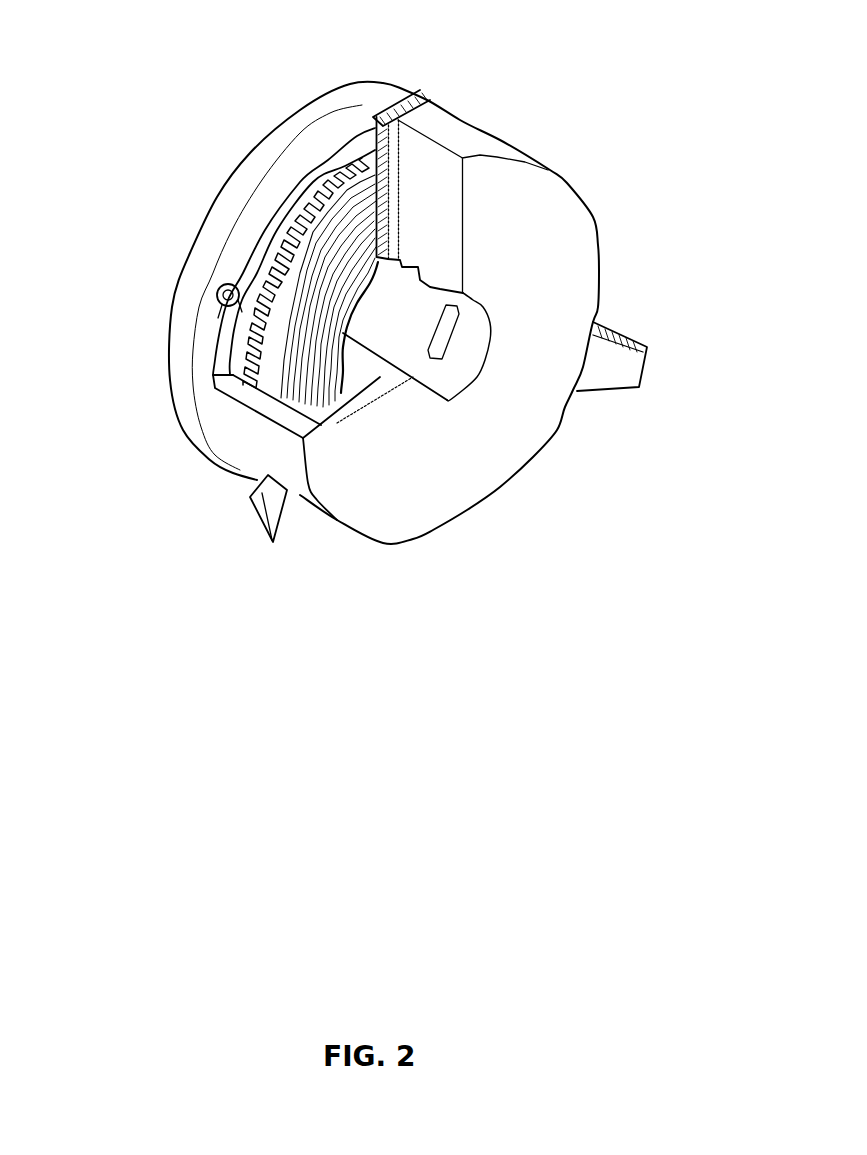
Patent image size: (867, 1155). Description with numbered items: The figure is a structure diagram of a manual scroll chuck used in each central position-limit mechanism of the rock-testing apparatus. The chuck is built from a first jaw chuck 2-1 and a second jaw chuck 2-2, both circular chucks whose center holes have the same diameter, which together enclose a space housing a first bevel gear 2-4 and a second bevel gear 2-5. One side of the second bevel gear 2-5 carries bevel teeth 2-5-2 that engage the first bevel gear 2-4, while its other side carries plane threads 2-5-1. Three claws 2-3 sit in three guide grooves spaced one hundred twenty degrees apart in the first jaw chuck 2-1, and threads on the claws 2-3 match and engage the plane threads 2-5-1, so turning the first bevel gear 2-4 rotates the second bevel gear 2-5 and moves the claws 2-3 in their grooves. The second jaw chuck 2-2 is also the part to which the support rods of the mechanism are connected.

The first jaw chuck 2-1 is at (543, 193).
The second jaw chuck 2-2 is at (307, 138).
The claw 2-3 is at (400, 110).
The first bevel gear 2-4 is at (253, 273).
The second bevel gear 2-5 is at (273, 334).
The plane threads 2-5-1 is at (285, 430).
The bevel teeth 2-5-2 is at (225, 393).